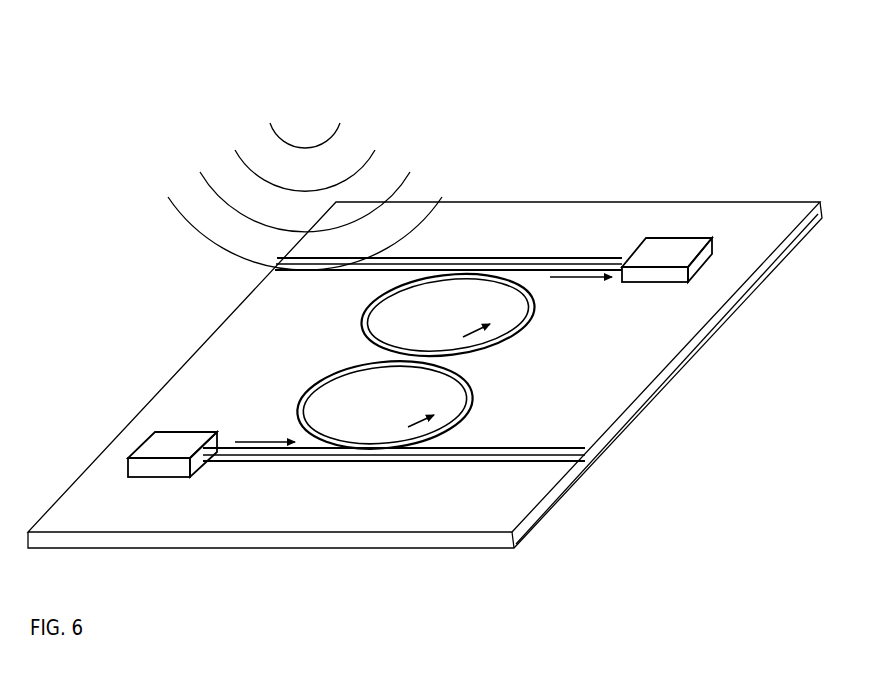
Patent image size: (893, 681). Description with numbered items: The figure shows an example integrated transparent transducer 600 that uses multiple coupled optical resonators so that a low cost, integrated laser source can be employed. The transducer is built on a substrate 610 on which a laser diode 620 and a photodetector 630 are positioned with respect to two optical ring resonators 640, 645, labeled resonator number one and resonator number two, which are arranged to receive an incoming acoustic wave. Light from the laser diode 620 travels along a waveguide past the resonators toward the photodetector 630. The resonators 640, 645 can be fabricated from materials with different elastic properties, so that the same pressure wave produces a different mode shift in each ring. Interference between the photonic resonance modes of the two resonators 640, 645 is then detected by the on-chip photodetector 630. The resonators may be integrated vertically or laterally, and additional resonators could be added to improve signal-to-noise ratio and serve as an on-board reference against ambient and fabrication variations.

The integrated transparent transducer 600 is at (371, 73).
The substrate 610 is at (491, 202).
The laser diode 620 is at (190, 432).
The photodetector 630 is at (668, 238).
The optical ring resonator (resonator #1) 640 is at (472, 390).
The optical ring resonator (resonator #2) 645 is at (363, 325).